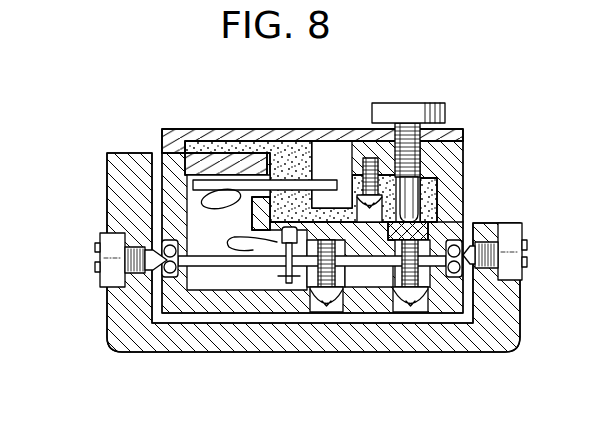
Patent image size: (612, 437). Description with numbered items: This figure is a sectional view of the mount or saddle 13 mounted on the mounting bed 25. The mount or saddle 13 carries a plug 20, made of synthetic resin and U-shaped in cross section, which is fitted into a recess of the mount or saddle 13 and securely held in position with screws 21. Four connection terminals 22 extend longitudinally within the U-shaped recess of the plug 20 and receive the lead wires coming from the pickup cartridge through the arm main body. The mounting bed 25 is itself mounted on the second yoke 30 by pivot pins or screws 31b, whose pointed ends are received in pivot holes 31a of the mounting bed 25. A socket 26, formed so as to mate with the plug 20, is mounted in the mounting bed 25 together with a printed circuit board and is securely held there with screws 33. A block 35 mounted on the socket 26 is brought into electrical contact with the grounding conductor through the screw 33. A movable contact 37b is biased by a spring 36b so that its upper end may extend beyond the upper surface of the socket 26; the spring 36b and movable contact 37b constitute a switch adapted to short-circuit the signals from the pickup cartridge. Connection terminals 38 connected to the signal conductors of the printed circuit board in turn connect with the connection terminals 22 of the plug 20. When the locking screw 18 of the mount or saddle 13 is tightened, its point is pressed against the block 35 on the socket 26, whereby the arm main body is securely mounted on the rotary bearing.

The mount or saddle 13 is at (216, 129).
The locking screw 18 is at (405, 108).
The plug 20 is at (428, 187).
The screws 21 is at (367, 158).
The connection terminals 22 is at (283, 178).
The mounting bed 25 is at (215, 302).
The socket 26 is at (365, 238).
The second yoke 30 is at (253, 340).
The pivot holes 31a is at (165, 253).
The pivot pins or screws 31b is at (107, 277).
The screws 33 is at (327, 300).
The block 35 is at (422, 225).
The spring 36b is at (255, 247).
The movable contact 37b is at (289, 285).
The connection terminals 38 is at (201, 210).